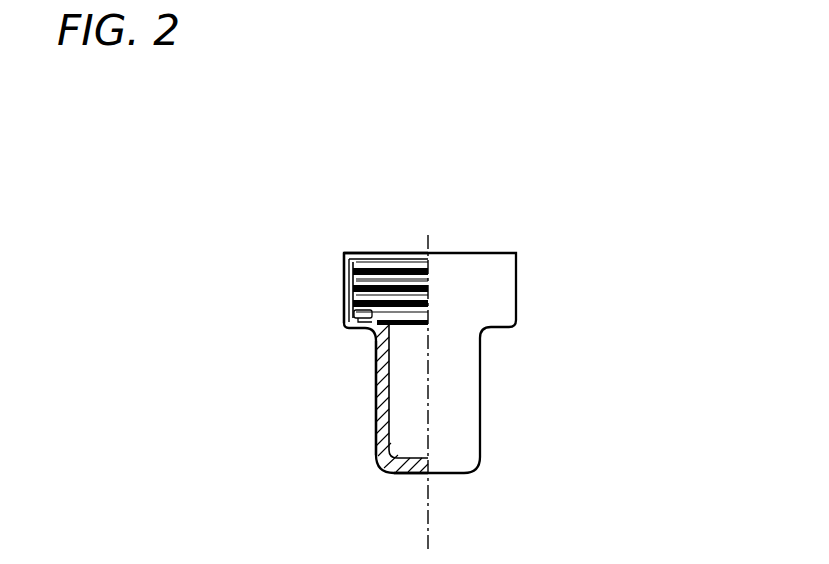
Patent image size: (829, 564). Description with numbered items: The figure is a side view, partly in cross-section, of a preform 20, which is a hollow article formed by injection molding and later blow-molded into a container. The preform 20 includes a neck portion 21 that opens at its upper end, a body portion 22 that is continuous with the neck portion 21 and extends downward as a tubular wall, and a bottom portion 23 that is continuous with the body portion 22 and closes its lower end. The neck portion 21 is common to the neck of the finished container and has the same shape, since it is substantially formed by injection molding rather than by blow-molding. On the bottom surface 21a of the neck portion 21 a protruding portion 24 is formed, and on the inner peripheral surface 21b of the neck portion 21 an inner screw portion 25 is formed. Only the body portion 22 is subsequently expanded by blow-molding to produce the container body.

The preform 20 is at (577, 160).
The neck portion 21 is at (347, 272).
The bottom surface 21a is at (356, 291).
The inner peripheral surface 21b is at (363, 250).
The body portion 22 is at (380, 402).
The bottom portion 23 is at (408, 468).
The protruding portion 24 is at (358, 324).
The inner screw portion 25 is at (390, 265).